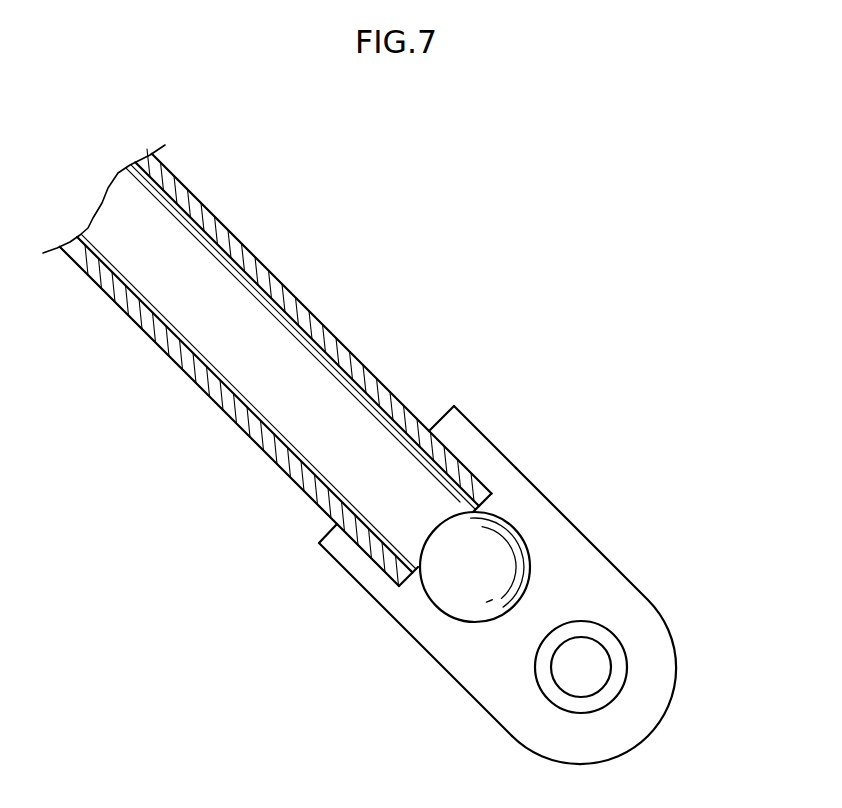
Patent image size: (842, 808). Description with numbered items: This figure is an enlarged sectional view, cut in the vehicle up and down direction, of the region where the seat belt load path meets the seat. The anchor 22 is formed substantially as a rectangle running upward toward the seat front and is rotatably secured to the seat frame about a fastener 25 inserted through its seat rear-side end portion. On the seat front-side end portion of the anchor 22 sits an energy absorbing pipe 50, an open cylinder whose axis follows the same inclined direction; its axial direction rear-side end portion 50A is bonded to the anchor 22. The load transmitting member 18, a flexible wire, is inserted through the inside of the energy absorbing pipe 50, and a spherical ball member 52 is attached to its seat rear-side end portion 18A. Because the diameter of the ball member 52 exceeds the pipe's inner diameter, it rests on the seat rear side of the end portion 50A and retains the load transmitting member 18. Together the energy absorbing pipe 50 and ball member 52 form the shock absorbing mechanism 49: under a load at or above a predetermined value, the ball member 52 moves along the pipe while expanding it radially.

The load transmitting member 18 is at (207, 247).
The seat rear-side end portion 18A is at (420, 523).
The anchor 22 is at (520, 505).
The fastener 25 is at (587, 657).
The shock absorbing mechanism 49 is at (320, 298).
The energy absorbing pipe 50 is at (362, 366).
The axial direction rear-side end portion 50A is at (479, 507).
The ball member 52 is at (537, 570).